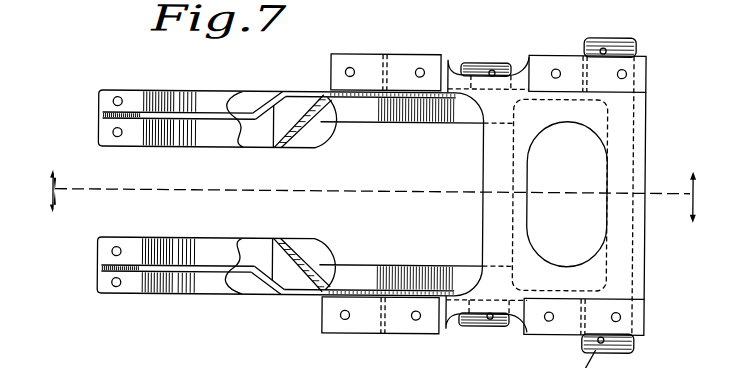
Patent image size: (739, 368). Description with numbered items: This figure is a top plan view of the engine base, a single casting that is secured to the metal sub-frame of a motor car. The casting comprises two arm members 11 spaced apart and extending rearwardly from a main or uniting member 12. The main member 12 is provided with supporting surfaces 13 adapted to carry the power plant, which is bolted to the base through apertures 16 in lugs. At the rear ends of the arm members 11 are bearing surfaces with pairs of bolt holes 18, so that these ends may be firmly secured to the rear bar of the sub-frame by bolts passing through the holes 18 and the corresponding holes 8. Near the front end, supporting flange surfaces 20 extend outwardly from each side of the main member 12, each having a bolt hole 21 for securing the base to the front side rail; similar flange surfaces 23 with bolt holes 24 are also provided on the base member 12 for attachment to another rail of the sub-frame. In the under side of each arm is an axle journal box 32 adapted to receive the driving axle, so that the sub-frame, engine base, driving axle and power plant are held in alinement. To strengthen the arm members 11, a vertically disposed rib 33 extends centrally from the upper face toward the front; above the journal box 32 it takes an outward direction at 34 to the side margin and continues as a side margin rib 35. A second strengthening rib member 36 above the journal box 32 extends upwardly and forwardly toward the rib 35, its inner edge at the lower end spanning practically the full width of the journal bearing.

The bolt hole 8 is at (47, 188).
The arm member 11 is at (253, 131).
The main member 12 is at (531, 235).
The supporting surface 13 is at (400, 55).
The aperture 16 is at (344, 70).
The bolt hole 18 is at (118, 137).
The supporting flange surface 20 is at (637, 50).
The bolt hole 21 is at (605, 47).
The flange surface 23 is at (473, 60).
The bolt hole 24 is at (493, 67).
The axle journal box 32 is at (272, 236).
The rib 33 is at (126, 112).
The outwardly directed rib portion 34 is at (272, 98).
The side margin rib 35 is at (381, 99).
The second strengthening rib member 36 is at (305, 119).